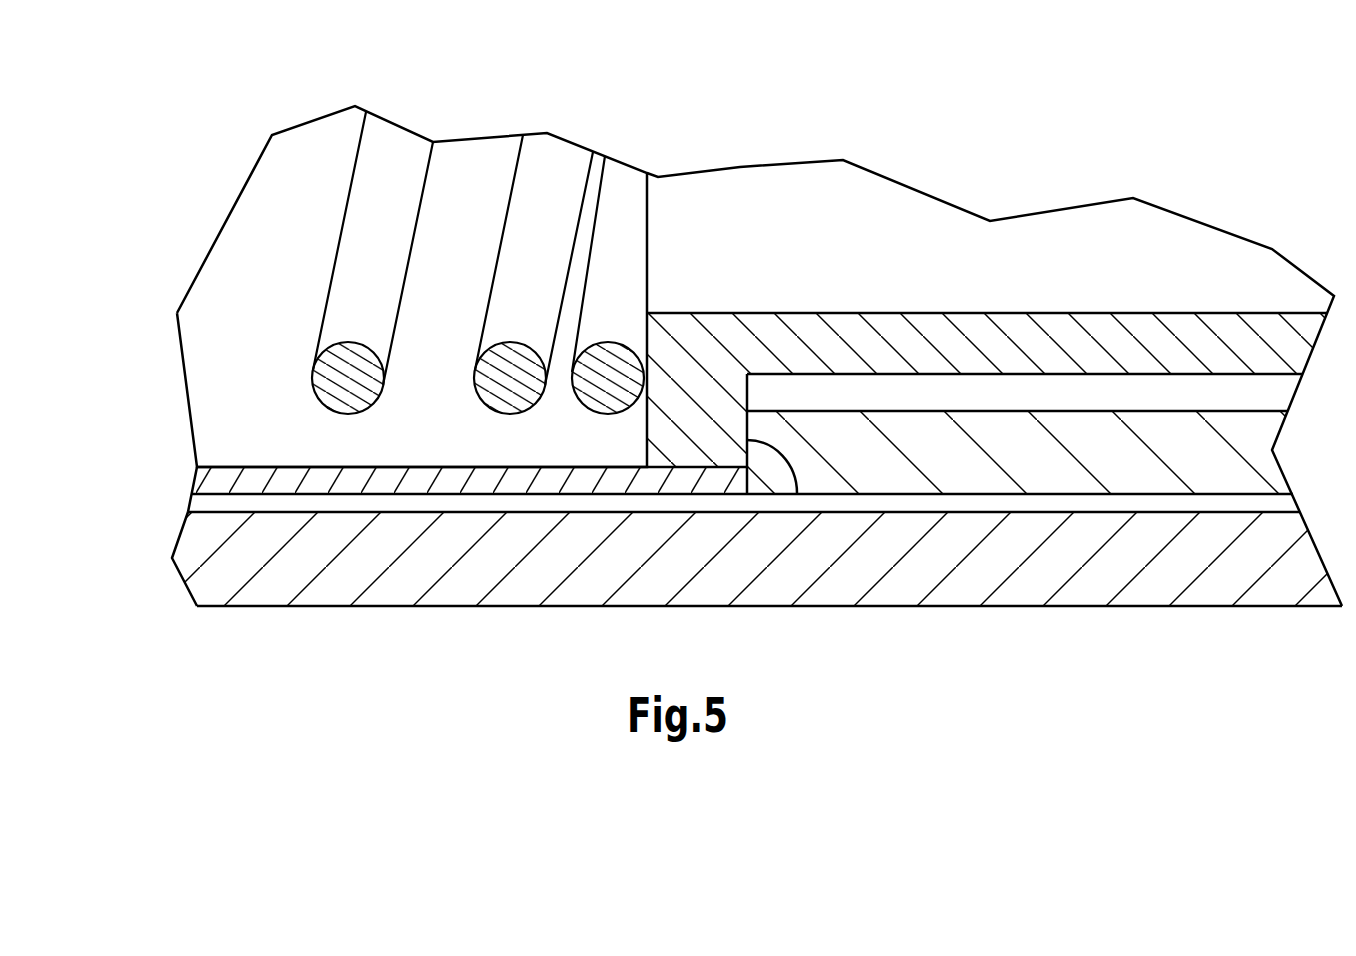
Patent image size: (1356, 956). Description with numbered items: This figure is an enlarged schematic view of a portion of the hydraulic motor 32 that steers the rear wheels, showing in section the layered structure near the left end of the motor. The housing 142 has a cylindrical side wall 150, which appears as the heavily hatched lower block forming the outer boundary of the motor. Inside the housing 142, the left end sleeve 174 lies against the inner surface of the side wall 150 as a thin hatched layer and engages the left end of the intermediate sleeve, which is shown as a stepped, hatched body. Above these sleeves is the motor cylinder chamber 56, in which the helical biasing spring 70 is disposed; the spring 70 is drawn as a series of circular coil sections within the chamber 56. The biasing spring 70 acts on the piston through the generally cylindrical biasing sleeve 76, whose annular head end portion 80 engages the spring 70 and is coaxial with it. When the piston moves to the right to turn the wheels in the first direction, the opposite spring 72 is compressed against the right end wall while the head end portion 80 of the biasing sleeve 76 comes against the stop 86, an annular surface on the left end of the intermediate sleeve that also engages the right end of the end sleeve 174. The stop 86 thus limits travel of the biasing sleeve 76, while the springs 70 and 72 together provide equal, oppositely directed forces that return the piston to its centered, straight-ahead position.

The printhead assembly 32 is at (213, 685).
The motor cylinder chamber 56 is at (248, 312).
The biasing spring 70 is at (372, 243).
The biasing spring 72 is at (962, 457).
The biasing sleeve 76 is at (996, 316).
The annular head end portion 80 is at (702, 425).
The stop 86 is at (797, 493).
The housing 142 is at (170, 602).
The side wall 150 is at (315, 563).
The left end sleeve 174 is at (455, 482).